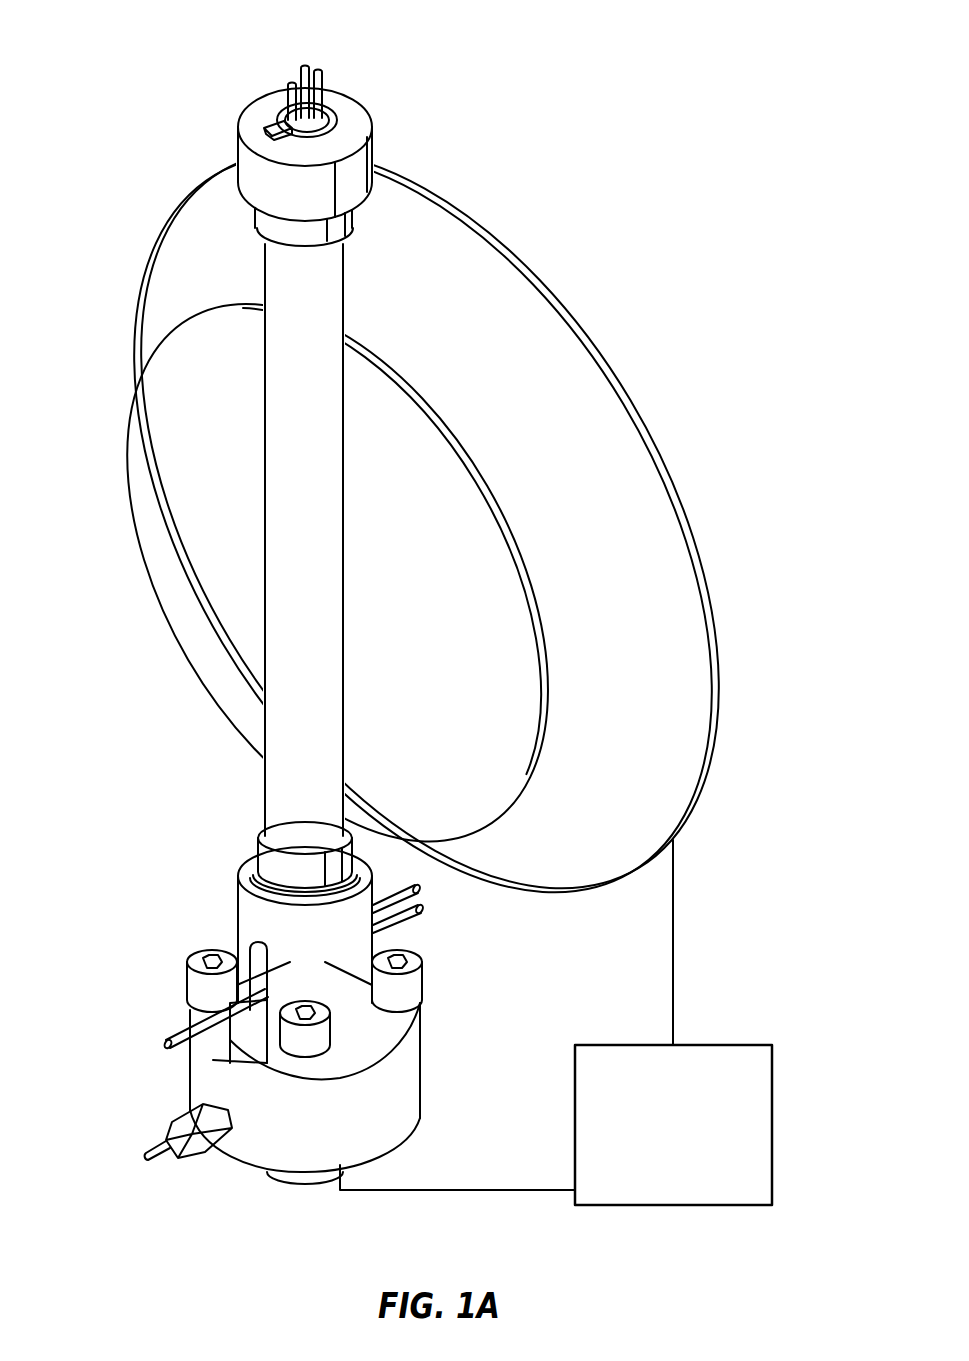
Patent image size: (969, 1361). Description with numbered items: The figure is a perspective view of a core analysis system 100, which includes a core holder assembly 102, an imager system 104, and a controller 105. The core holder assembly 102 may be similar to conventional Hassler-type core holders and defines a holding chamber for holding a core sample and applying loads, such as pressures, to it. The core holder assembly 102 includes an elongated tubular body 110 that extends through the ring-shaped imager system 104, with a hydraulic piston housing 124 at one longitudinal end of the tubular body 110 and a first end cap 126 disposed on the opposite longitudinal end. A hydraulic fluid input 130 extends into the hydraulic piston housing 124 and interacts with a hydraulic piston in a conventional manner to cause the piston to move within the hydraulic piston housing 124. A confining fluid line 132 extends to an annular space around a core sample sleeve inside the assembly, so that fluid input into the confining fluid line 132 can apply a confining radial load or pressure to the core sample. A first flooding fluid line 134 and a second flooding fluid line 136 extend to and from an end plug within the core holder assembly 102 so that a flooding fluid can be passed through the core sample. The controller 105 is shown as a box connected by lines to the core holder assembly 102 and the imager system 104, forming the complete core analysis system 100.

The core analysis system 100 is at (143, 78).
The core holder assembly 102 is at (238, 832).
The imager system 104 is at (632, 492).
The controller 105 is at (772, 1098).
The tubular body 110 is at (278, 778).
The hydraulic piston housing 124 is at (403, 1103).
The first end cap 126 is at (368, 150).
The hydraulic fluid input 130 is at (180, 1118).
The confining fluid line 132 is at (232, 1030).
The first flooding fluid line 134 is at (424, 903).
The second flooding fluid line 136 is at (418, 926).